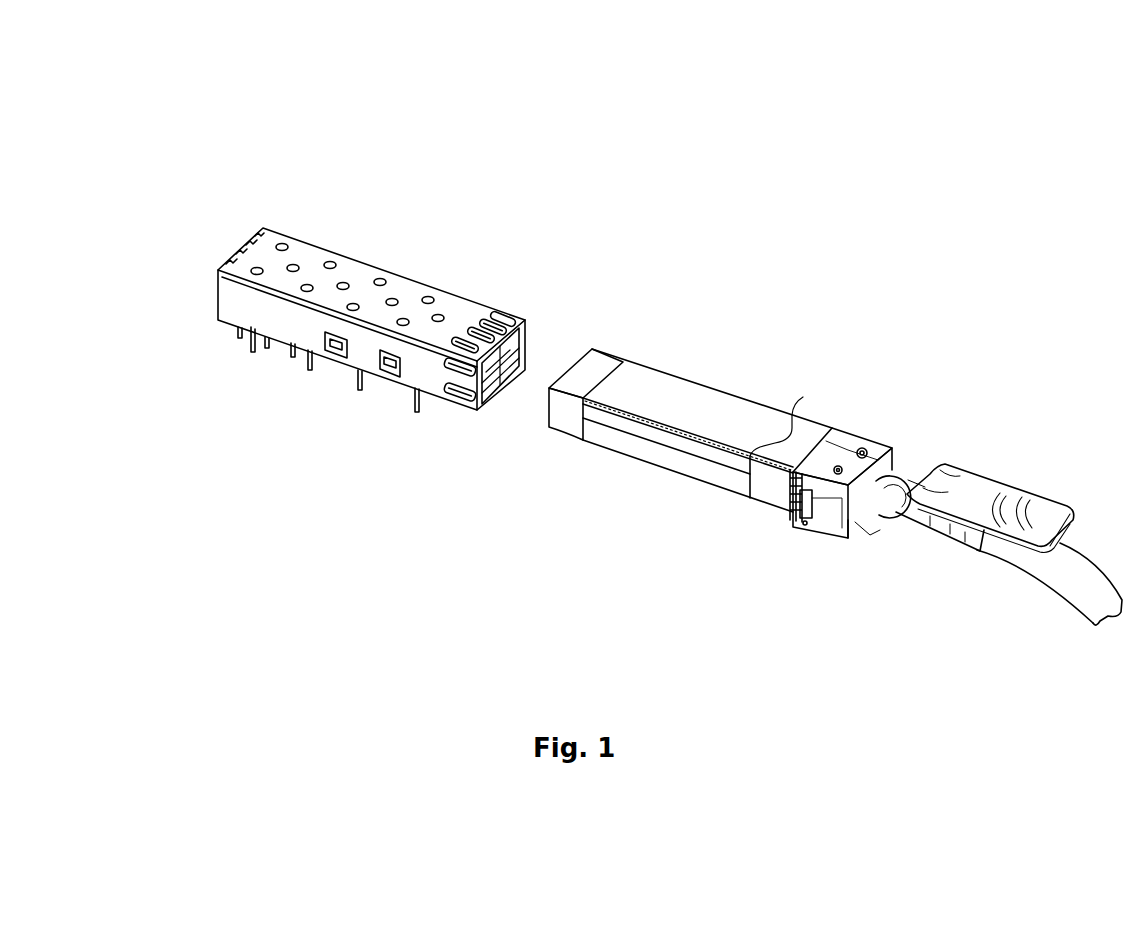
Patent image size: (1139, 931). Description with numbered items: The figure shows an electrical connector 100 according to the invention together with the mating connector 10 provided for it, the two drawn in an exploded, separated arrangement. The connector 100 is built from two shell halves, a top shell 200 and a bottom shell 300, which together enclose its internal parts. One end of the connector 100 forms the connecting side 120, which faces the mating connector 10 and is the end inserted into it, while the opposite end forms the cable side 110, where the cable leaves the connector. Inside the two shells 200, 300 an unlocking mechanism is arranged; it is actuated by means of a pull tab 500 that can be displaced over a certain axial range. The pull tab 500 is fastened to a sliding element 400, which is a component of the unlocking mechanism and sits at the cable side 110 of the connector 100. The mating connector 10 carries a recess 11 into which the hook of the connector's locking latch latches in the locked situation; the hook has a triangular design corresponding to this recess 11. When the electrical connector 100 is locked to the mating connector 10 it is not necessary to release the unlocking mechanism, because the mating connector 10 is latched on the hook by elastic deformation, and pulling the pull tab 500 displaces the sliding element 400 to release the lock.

The mating connector 10 is at (355, 217).
The recess 11 is at (497, 383).
The electrical connector 100 is at (807, 394).
The cable side 110 is at (885, 540).
The connecting side 120 is at (572, 345).
The top shell 200 is at (713, 420).
The bottom shell 300 is at (653, 455).
The sliding element 400 is at (828, 540).
The pull tab 500 is at (963, 492).